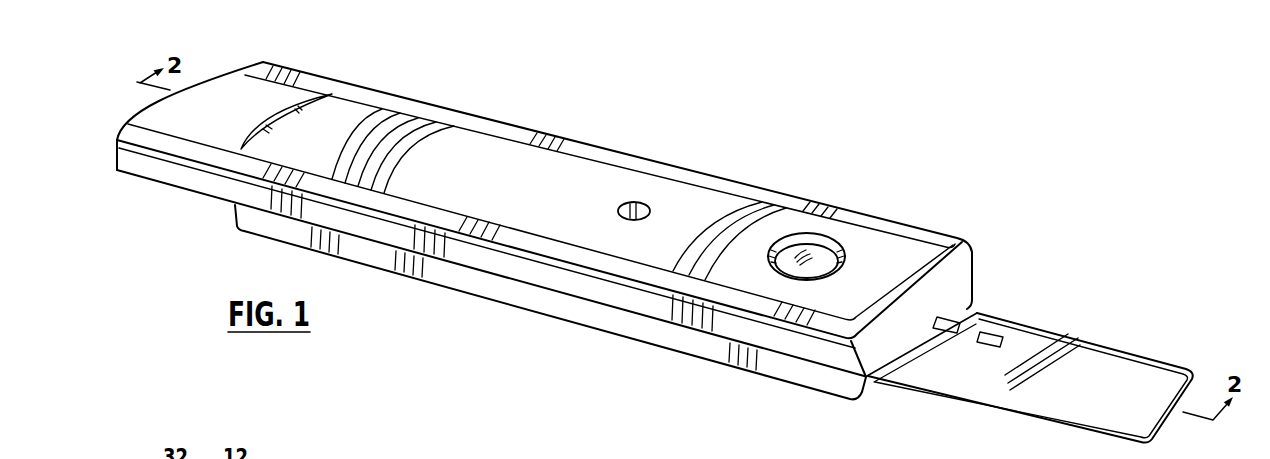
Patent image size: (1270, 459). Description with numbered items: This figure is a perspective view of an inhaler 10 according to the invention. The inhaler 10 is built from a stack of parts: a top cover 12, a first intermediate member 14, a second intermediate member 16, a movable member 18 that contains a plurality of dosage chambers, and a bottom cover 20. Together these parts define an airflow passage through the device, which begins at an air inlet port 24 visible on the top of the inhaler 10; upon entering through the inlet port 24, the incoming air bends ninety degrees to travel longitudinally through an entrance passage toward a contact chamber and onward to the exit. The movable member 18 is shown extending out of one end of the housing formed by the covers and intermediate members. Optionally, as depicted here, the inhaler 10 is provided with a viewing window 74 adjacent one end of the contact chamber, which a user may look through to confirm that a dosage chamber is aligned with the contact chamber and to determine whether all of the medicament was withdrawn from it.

The inhaler 10 is at (898, 152).
The top cover 12 is at (627, 188).
The first intermediate member 14 is at (970, 265).
The second intermediate member 16 is at (968, 292).
The movable member 18 is at (1090, 370).
The bottom cover 20 is at (818, 377).
The air inlet port 24 is at (650, 208).
The viewing window 74 is at (820, 258).